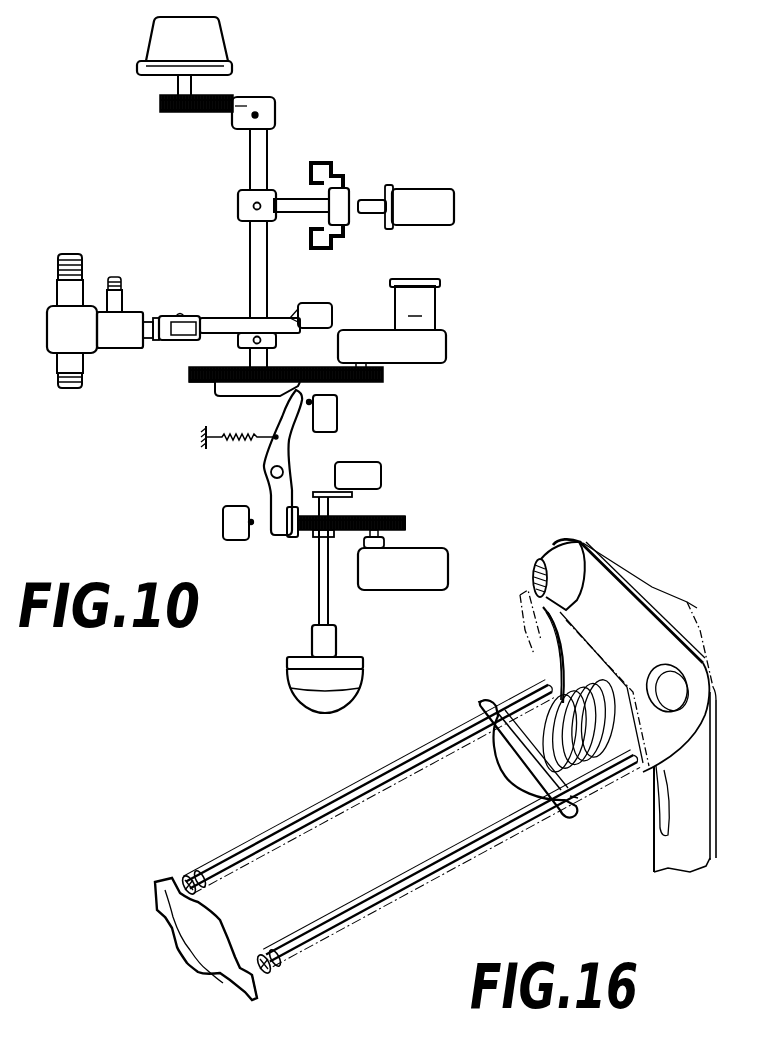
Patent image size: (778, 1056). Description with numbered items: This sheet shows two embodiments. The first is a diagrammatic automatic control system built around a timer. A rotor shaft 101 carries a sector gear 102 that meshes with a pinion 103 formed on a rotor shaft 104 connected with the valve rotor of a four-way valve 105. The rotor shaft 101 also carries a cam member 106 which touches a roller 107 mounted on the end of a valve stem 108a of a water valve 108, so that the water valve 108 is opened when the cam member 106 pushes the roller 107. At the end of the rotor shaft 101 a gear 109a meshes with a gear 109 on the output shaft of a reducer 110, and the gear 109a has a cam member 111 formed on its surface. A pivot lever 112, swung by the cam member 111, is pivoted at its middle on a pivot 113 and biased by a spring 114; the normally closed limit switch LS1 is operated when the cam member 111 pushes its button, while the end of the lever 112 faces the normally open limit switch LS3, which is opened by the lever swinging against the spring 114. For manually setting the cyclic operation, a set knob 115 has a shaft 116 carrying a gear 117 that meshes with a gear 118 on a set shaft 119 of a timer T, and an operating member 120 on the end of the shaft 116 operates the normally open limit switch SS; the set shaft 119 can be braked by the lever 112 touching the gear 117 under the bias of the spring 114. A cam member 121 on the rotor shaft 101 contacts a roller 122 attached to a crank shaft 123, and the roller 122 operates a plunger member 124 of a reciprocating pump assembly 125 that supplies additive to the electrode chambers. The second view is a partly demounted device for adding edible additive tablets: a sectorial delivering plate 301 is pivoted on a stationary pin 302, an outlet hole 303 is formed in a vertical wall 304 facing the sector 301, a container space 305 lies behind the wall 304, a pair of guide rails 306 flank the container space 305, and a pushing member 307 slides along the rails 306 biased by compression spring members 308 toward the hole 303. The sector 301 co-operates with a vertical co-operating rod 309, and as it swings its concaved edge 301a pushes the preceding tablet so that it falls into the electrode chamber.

In FIG. 10, the rotor shaft 101 is at (254, 165).
In FIG. 10, the sector gear 102 is at (232, 100).
In FIG. 10, the pinion 103 is at (172, 112).
In FIG. 10, the rotor shaft 104 is at (178, 85).
In FIG. 10, the four-way valve 105 is at (191, 49).
In FIG. 10, the cam member 106 is at (220, 326).
In FIG. 10, the roller 107 is at (186, 340).
In FIG. 10, the water valve 108 is at (74, 338).
In FIG. 10, the valve stem 108a is at (150, 314).
In FIG. 10, the gear 109 is at (381, 382).
In FIG. 10, the gear 109a is at (196, 382).
In FIG. 10, the reducer 110 is at (446, 349).
In FIG. 10, the cam member 111 is at (256, 393).
In FIG. 10, the pivot lever 112 is at (283, 452).
In FIG. 10, the pivot 113 is at (270, 481).
In FIG. 10, the spring 114 is at (250, 447).
In FIG. 10, the set knob 115 is at (308, 684).
In FIG. 10, the shaft 116 is at (322, 604).
In FIG. 10, the gear 117 is at (335, 520).
In FIG. 10, the gear 118 is at (404, 524).
In FIG. 10, the set shaft 119 is at (388, 550).
In FIG. 10, the operating member 120 is at (318, 492).
In FIG. 10, the cam member 121 is at (305, 209).
In FIG. 10, the roller 122 is at (341, 205).
In FIG. 10, the crank shaft 123 is at (328, 172).
In FIG. 10, the plunger member 124 is at (373, 212).
In FIG. 10, the reciprocating pump assembly 125 is at (421, 218).
In FIG. 10, the limit switch LS1 is at (336, 412).
In FIG. 10, the limit switch LS3 is at (246, 541).
In FIG. 10, the limit switch SS is at (365, 471).
In FIG. 10, the timer T is at (402, 591).
In FIG. 16, the sectorial delivering plate 301 is at (622, 605).
In FIG. 16, the concaved edge 301a is at (556, 662).
In FIG. 16, the stationary pin 302 is at (555, 573).
In FIG. 16, the outlet hole 303 is at (600, 772).
In FIG. 16, the vertical wall 304 is at (616, 678).
In FIG. 16, the container space 305 is at (386, 836).
In FIG. 16, the guide rails 306 is at (347, 913).
In FIG. 16, the pushing member 307 is at (512, 775).
In FIG. 16, the compression spring members 308 is at (184, 876).
In FIG. 16, the vertical co-operating rod 309 is at (678, 866).